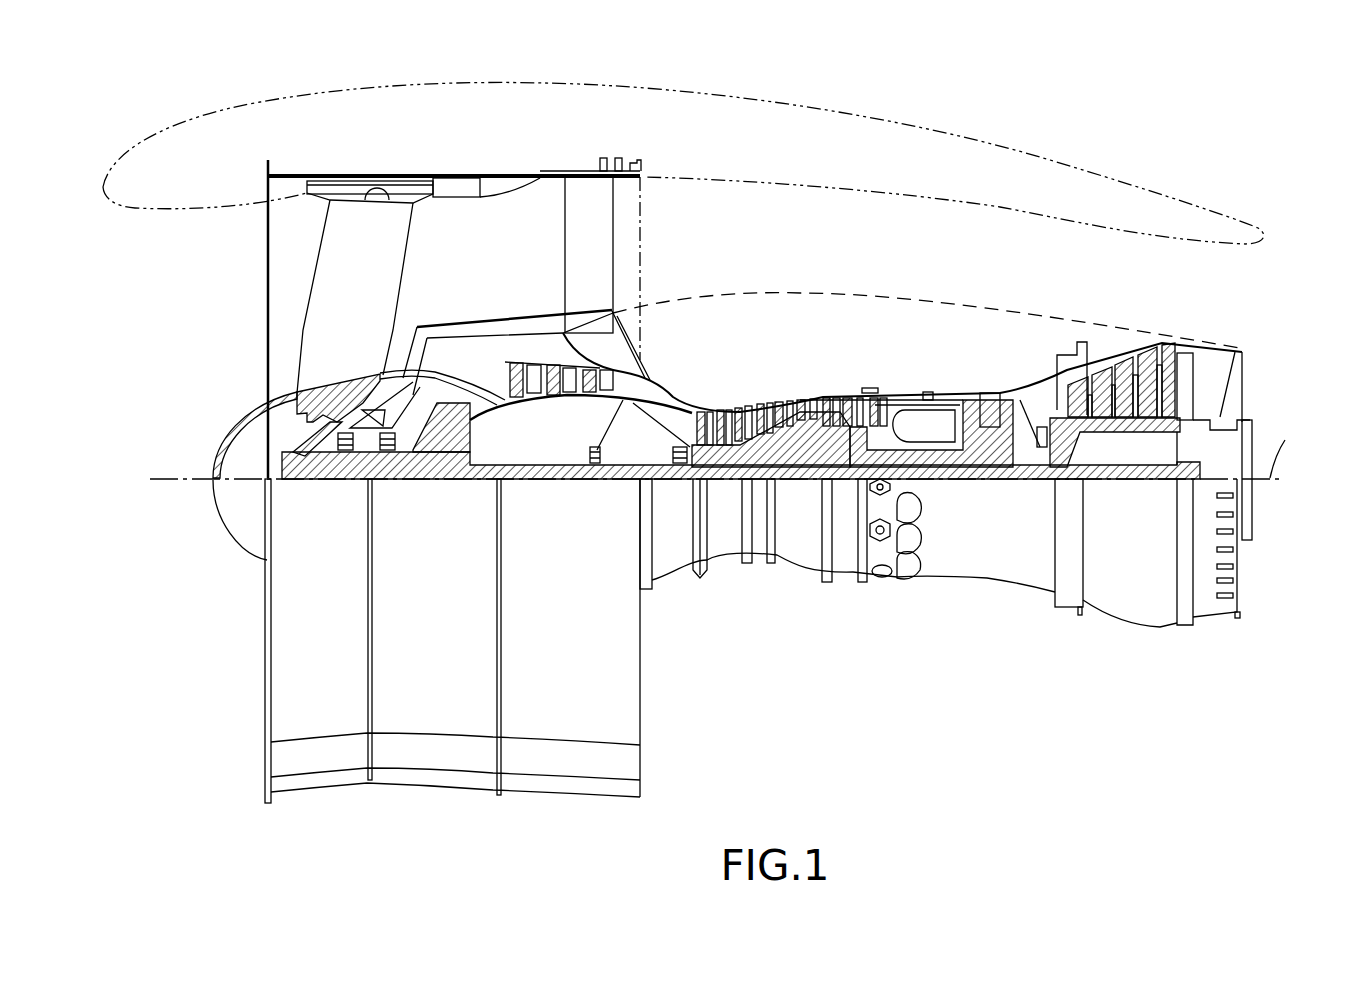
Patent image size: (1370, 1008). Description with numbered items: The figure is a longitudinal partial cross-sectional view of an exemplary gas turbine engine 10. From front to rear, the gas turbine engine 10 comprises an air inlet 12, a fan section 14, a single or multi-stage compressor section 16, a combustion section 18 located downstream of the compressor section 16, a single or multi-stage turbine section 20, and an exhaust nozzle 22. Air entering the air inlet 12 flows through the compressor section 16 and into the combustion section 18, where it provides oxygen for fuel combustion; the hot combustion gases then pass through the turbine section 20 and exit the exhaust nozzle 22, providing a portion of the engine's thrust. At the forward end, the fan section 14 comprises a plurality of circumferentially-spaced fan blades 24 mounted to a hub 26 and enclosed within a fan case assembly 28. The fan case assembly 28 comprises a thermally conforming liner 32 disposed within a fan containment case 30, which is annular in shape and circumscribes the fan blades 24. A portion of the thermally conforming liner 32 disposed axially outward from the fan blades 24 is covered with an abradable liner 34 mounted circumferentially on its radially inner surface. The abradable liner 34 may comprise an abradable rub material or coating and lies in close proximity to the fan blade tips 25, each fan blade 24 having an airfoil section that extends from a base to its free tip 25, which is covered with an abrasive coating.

The gas turbine engine 10 is at (1222, 195).
The air inlet 12 is at (205, 352).
The fan section 14 is at (515, 165).
The compressor section 16 is at (770, 400).
The combustion section 18 is at (930, 392).
The turbine section 20 is at (1110, 348).
The exhaust nozzle 22 is at (1243, 375).
The fan blade 24 is at (338, 290).
The fan blade tip 25 is at (390, 190).
The hub 26 is at (320, 427).
The fan case assembly 28 is at (435, 165).
The fan containment case 30 is at (340, 172).
The thermally conforming liner 32 is at (423, 197).
The abradable liner 34 is at (323, 193).